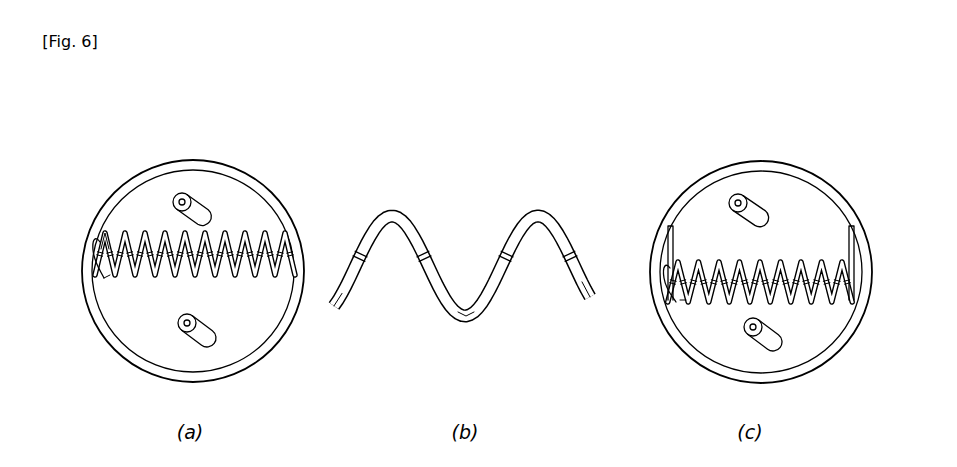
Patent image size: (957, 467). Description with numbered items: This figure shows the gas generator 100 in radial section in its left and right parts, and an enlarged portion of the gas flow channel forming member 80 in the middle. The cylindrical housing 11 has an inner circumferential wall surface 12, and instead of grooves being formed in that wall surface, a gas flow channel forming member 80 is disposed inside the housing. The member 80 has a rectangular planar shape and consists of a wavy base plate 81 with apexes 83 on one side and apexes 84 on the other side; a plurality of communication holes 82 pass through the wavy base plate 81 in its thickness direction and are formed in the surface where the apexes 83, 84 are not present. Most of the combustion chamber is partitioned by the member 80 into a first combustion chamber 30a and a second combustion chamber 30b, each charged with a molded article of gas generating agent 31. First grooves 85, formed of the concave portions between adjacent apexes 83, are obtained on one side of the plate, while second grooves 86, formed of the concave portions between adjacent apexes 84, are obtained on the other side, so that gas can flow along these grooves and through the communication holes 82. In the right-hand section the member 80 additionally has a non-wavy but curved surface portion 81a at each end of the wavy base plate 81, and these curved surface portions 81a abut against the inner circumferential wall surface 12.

The gas generator 100 is at (477, 239).
The cylindrical housing 11 is at (169, 161).
The inner circumferential wall surface 12 is at (146, 188).
The gas generating agent 31 is at (200, 204).
The first combustion chamber 30a is at (128, 226).
The second combustion chamber 30b is at (133, 333).
The gas flow channel forming member 80 is at (461, 261).
The wavy base plate 81 is at (370, 222).
The curved surface portion 81a is at (672, 227).
The communication holes 82 is at (370, 260).
The apexes on one side 83 is at (247, 236).
The apexes on the other side 84 is at (277, 278).
The first grooves 85 is at (100, 242).
The second grooves 86 is at (104, 278).